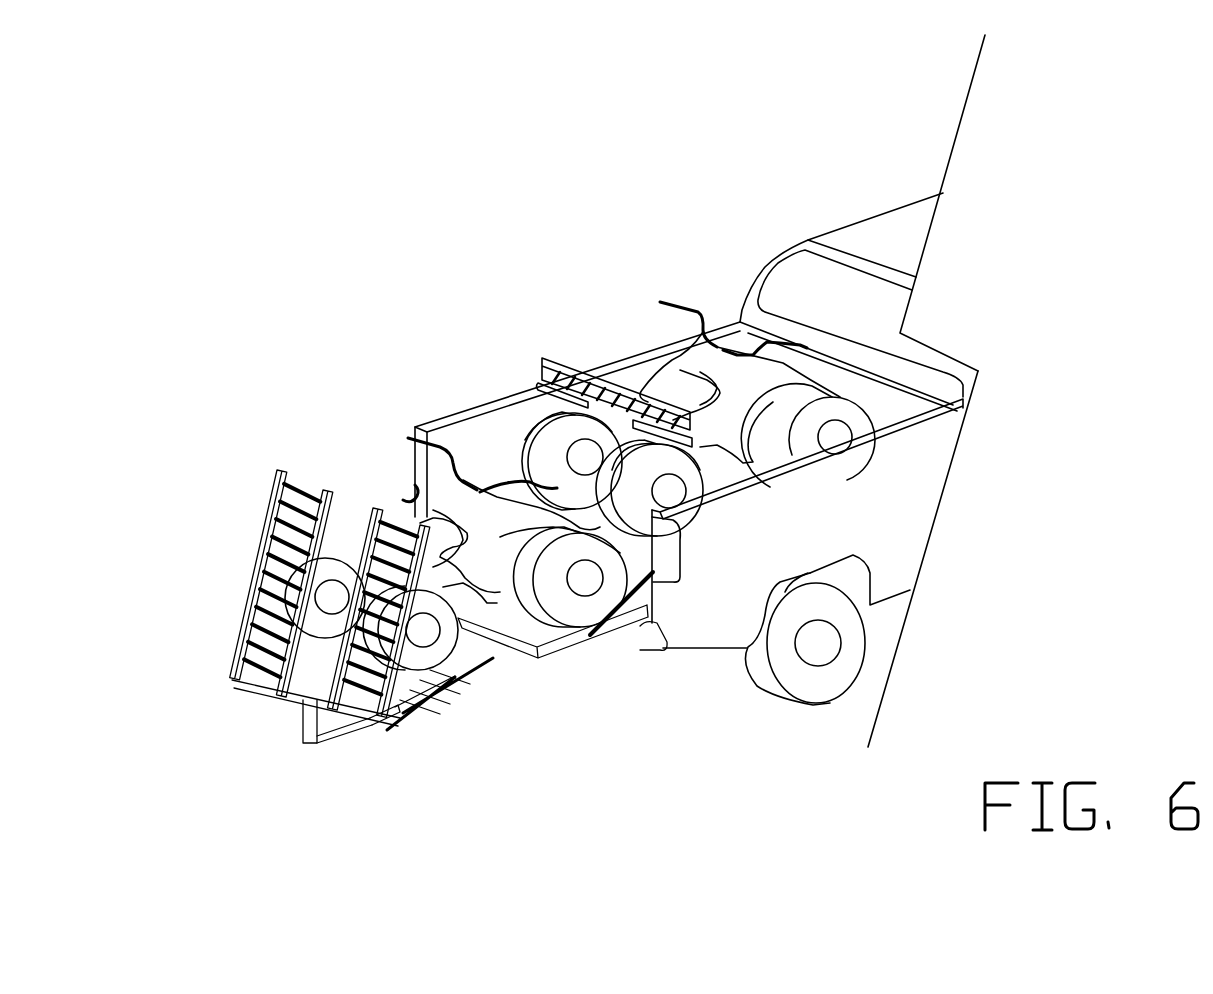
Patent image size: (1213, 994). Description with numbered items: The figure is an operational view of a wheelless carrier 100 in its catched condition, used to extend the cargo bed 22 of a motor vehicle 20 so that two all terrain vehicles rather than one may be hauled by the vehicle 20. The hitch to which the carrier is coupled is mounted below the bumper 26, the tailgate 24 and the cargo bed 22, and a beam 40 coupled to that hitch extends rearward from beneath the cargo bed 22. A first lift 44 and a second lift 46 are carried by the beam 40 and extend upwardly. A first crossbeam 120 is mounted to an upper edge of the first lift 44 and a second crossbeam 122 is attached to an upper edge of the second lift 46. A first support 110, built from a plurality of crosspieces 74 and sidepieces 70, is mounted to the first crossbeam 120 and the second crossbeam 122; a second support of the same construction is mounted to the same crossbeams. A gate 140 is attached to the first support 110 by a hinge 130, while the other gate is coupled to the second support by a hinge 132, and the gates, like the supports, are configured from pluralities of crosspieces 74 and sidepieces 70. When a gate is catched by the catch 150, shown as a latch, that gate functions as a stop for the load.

The motor vehicle 20 is at (842, 233).
The cargo bed 22 is at (897, 415).
The tailgate 24 is at (600, 635).
The bumper 26 is at (657, 647).
The beam 40 is at (500, 657).
The first lift 44 is at (423, 700).
The second lift 46 is at (310, 745).
The sidepiece 70 is at (277, 485).
The crosspieces 74 is at (263, 586).
The wheelless carrier 100 is at (362, 470).
The first support 110 is at (328, 492).
The first crossbeam 120 is at (498, 660).
The second crossbeam 122 is at (334, 728).
The hinge 130 is at (250, 686).
The hinge 132 is at (364, 727).
The gate 140 is at (293, 697).
The catch 150 is at (457, 678).